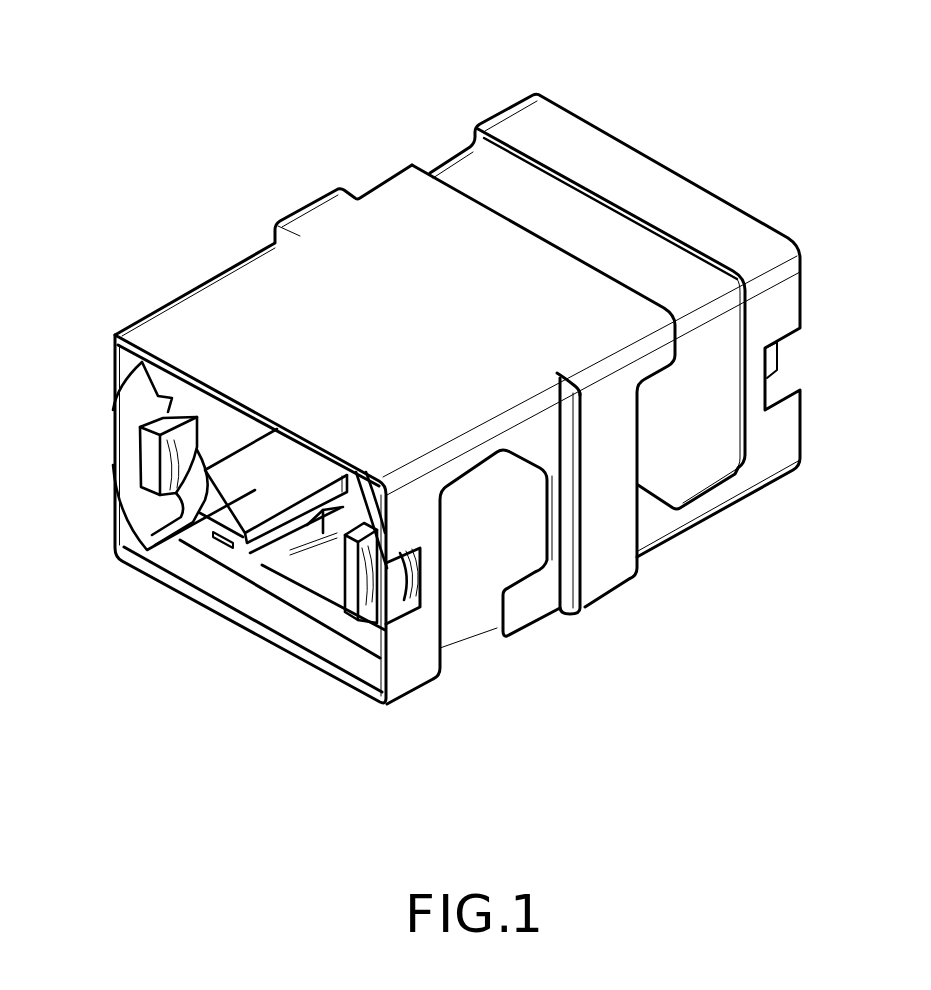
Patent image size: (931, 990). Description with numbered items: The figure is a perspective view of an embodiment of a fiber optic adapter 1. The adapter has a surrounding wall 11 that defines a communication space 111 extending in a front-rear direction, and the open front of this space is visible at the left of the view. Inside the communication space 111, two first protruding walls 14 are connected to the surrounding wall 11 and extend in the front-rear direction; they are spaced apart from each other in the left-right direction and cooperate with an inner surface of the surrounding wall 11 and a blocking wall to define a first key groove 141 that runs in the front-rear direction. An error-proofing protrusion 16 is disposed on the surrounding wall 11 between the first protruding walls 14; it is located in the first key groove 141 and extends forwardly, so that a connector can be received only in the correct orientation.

The fiber optic adapter 1 is at (262, 108).
The surrounding wall 11 is at (190, 313).
The communication space 111 is at (302, 470).
The first protruding walls 14 is at (207, 512).
The first key groove 141 is at (246, 571).
The error-proofing protrusion 16 is at (300, 557).